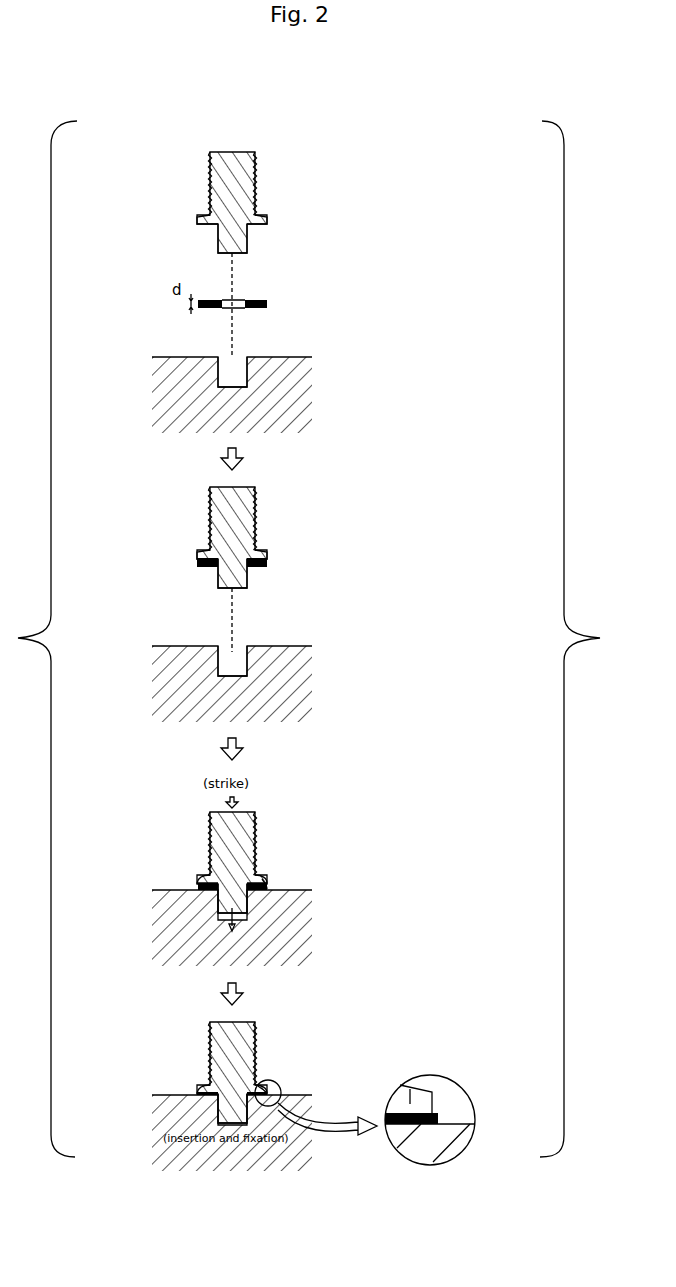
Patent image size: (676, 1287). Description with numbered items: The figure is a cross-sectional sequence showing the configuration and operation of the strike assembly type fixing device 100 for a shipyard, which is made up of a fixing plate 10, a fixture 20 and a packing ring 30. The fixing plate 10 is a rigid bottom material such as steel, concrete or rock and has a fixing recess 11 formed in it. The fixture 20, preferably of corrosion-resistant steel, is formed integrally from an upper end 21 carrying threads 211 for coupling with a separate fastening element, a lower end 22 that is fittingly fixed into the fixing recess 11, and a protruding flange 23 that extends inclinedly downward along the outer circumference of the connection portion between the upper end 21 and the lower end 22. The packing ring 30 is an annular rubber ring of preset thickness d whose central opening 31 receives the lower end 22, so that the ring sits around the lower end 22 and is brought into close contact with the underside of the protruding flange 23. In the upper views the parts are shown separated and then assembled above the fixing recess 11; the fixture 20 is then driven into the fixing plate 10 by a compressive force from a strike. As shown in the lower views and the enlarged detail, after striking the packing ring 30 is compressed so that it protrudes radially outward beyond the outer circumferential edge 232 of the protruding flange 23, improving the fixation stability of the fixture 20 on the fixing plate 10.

The strike assembly type fixing device 100 is at (143, 137).
The fixing plate 10 is at (170, 393).
The fixing recess 11 is at (232, 516).
The fixture 20 is at (206, 184).
The upper end 21 is at (255, 161).
The screw thread 211 is at (256, 187).
The lower end 22 is at (247, 238).
The protruding flange 23 is at (199, 221).
The outer circumferential edge 232 is at (268, 883).
The packing ring 30 is at (268, 303).
The washer hole 31 is at (238, 308).